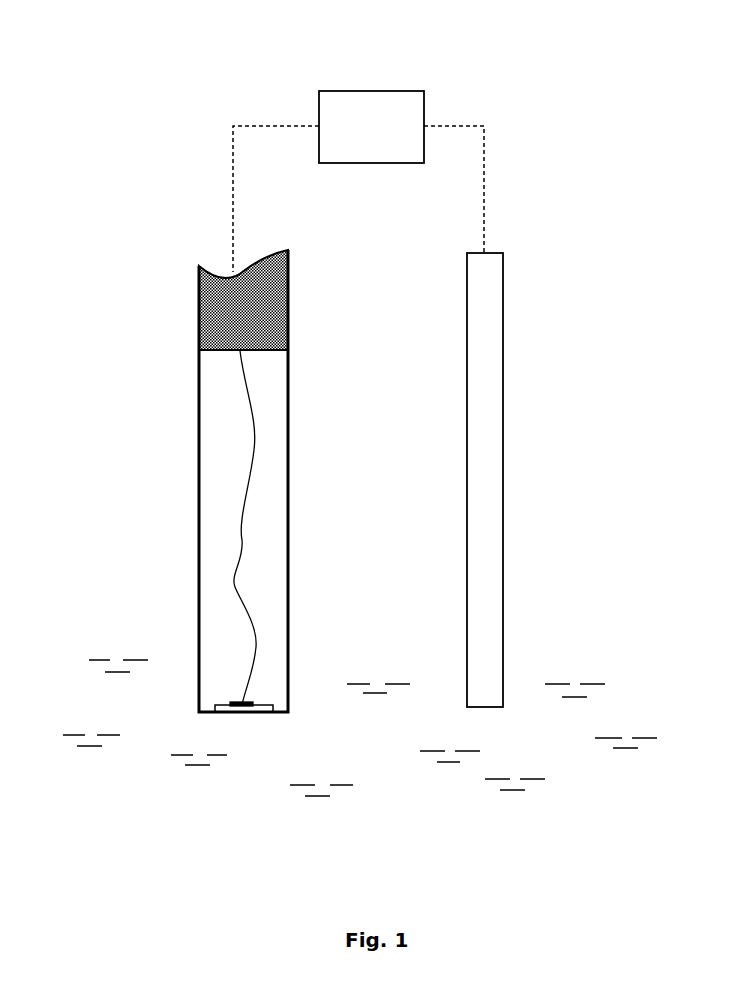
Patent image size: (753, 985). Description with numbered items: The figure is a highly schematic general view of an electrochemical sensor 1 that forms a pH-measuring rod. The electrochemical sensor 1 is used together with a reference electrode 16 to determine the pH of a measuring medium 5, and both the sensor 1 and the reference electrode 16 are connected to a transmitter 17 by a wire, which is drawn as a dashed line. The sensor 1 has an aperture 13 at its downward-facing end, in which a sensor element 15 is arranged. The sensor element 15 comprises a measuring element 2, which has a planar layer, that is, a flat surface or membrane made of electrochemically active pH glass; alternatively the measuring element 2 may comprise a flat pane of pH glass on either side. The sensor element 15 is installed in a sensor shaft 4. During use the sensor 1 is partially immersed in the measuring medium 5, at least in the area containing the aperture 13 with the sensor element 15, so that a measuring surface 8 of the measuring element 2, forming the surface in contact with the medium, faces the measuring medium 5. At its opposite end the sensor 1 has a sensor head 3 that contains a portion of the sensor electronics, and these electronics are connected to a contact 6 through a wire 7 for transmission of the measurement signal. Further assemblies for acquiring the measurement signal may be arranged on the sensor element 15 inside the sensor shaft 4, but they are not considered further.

The electrochemical sensor 1 is at (150, 347).
The measuring element 2 is at (260, 712).
The sensor head 3 is at (277, 302).
The sensor shaft 4 is at (288, 446).
The measuring medium 5 is at (121, 720).
The contact 6 is at (242, 705).
The wire 7 is at (252, 418).
The measuring surface 8 is at (250, 713).
The aperture 13 is at (194, 734).
The sensor element 15 is at (240, 733).
The reference electrode 16 is at (482, 395).
The transmitter 17 is at (375, 91).